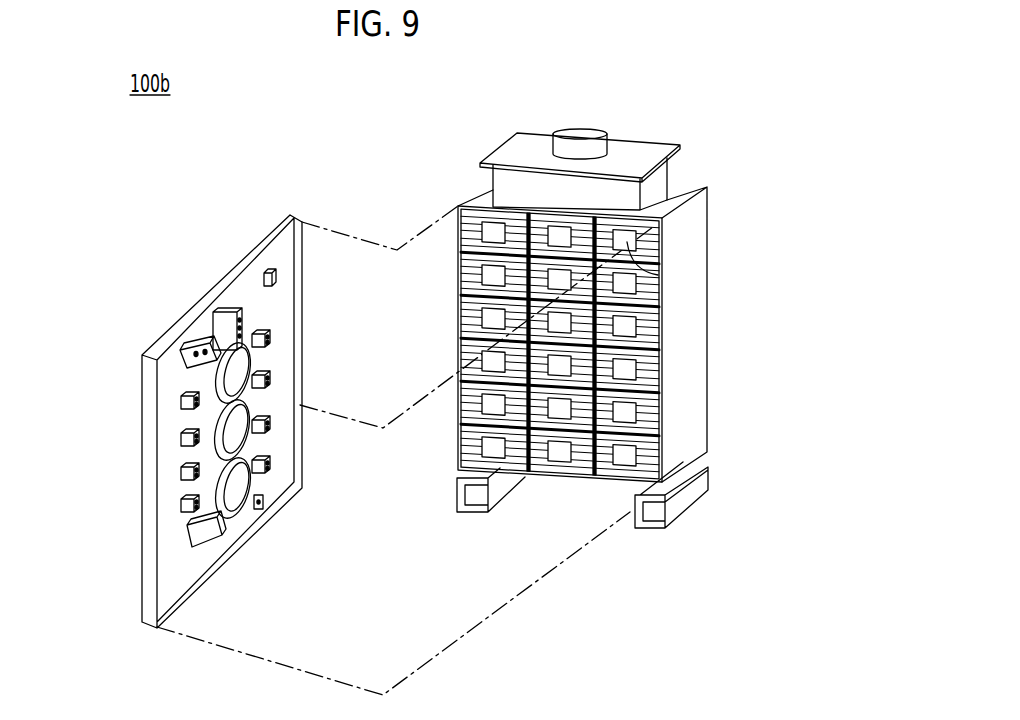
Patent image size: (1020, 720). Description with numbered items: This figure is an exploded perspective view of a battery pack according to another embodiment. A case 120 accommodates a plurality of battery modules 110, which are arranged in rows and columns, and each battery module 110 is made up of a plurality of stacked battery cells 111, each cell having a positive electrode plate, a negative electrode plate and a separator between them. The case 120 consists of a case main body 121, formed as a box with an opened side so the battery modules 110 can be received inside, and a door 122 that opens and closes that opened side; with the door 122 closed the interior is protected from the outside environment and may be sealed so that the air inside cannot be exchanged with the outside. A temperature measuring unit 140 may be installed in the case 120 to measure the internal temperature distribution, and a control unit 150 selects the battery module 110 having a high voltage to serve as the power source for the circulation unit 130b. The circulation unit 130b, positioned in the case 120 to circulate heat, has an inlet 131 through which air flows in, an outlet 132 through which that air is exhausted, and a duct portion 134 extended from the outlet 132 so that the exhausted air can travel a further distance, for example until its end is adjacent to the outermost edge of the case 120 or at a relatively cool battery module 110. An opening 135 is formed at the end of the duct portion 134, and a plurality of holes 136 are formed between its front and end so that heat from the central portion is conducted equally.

The battery module 110 is at (656, 257).
The battery cell 111 is at (650, 238).
The case 120 is at (345, 140).
The case main body 121 is at (480, 198).
The door 122 is at (222, 270).
The circulation unit 130b is at (180, 545).
The inlet 131 is at (230, 432).
The outlet 132 is at (262, 370).
The duct portion 134 is at (192, 468).
The opening 135 is at (227, 310).
The holes 136 is at (213, 332).
The temperature measuring unit 140 is at (667, 275).
The control unit 150 is at (277, 277).